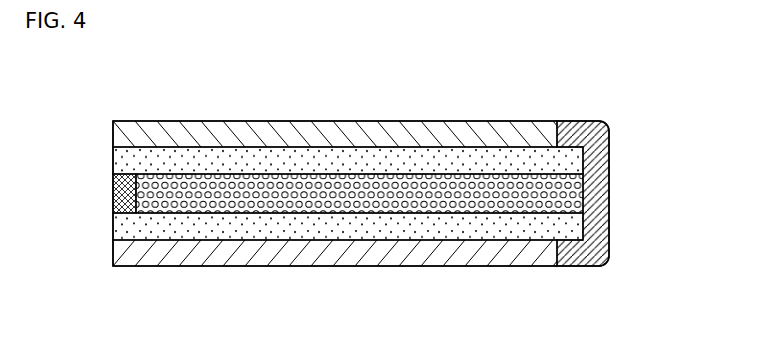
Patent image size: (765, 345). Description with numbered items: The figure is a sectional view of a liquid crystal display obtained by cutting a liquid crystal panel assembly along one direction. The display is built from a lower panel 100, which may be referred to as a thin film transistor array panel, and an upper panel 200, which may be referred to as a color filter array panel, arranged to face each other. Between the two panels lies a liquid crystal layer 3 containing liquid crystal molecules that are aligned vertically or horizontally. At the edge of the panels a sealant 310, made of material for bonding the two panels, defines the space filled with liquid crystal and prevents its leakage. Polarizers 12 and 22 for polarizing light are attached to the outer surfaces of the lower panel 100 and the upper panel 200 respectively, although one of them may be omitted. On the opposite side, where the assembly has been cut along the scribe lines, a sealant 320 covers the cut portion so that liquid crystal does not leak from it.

The polarizer 22 is at (254, 138).
The polarizer 12 is at (262, 252).
The upper panel 200 is at (332, 160).
The lower panel 100 is at (372, 226).
The liquid crystal layer 3 is at (447, 187).
The sealant 310 is at (120, 192).
The sealant 320 is at (598, 191).